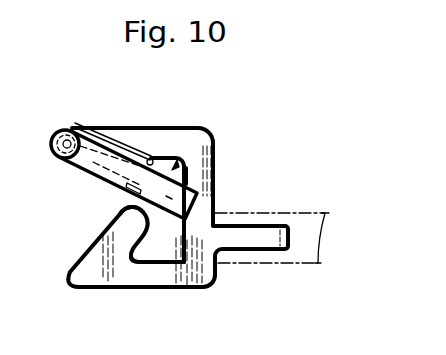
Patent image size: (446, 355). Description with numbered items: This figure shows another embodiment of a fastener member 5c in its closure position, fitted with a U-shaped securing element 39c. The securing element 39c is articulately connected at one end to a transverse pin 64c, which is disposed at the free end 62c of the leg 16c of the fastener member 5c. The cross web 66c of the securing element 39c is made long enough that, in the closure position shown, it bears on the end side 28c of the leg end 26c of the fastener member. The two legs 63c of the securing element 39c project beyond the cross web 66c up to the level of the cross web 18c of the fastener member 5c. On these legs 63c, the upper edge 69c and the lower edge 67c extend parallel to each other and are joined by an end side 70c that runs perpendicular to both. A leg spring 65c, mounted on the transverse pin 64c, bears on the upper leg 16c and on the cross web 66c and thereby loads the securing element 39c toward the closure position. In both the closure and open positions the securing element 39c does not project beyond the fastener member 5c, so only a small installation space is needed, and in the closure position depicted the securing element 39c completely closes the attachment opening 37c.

The fastener member 5c is at (230, 156).
The leg 16c is at (165, 145).
The cross web 18c is at (205, 180).
The leg end 26c is at (105, 243).
The end side 28c is at (122, 210).
The attachment opening 37c is at (139, 262).
The securing element 39c is at (175, 165).
The free end 62c is at (98, 133).
The legs 63c is at (213, 260).
The transverse pin 64c is at (58, 156).
The leg spring 65c is at (140, 148).
The cross web 66c is at (84, 170).
The lower edge 67c is at (169, 200).
The upper edge 69c is at (190, 172).
The end side 70c is at (180, 207).